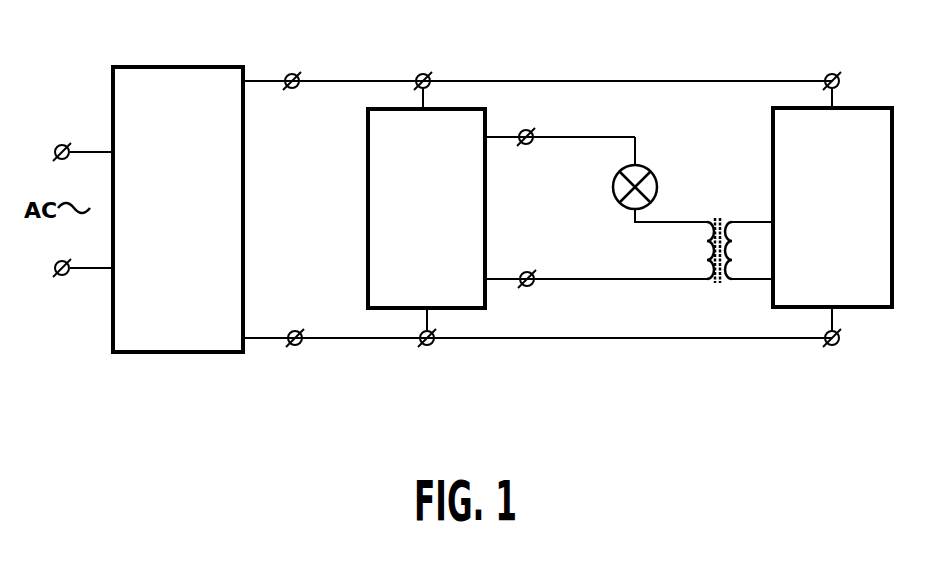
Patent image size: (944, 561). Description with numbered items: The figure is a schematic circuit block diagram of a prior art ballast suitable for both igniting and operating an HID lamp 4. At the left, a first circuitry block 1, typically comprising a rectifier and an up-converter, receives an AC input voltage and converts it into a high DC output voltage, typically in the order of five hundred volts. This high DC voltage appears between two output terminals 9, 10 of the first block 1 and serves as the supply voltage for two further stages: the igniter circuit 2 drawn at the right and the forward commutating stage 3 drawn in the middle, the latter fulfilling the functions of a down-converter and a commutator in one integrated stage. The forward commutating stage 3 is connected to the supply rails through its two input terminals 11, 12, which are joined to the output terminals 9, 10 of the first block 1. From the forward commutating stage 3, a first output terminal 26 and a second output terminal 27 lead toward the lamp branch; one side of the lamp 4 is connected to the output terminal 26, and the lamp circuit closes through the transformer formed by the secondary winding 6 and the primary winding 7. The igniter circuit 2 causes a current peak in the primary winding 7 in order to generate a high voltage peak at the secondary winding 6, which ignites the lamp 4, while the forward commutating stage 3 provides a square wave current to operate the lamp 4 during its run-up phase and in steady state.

The first circuitry block 1 is at (173, 346).
The igniter circuit 2 is at (881, 308).
The forward commutating stage 3 is at (385, 201).
The HID lamp 4 is at (613, 193).
The secondary winding 6 is at (700, 220).
The primary winding 7 is at (736, 220).
The output terminal 9 is at (291, 74).
The output terminal 10 is at (297, 347).
The input terminal 11 is at (423, 74).
The input terminal 12 is at (427, 347).
The first output terminal 26 is at (525, 146).
The output terminal 27 is at (526, 272).